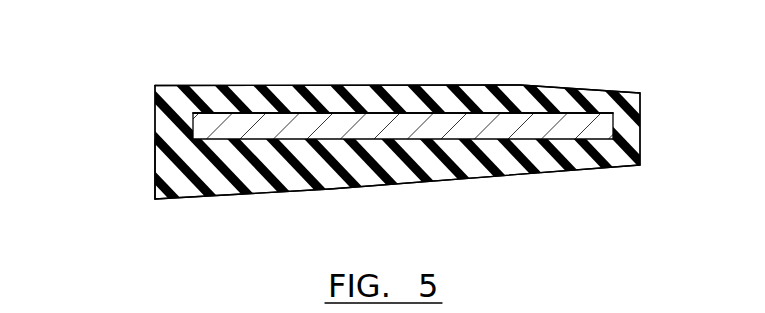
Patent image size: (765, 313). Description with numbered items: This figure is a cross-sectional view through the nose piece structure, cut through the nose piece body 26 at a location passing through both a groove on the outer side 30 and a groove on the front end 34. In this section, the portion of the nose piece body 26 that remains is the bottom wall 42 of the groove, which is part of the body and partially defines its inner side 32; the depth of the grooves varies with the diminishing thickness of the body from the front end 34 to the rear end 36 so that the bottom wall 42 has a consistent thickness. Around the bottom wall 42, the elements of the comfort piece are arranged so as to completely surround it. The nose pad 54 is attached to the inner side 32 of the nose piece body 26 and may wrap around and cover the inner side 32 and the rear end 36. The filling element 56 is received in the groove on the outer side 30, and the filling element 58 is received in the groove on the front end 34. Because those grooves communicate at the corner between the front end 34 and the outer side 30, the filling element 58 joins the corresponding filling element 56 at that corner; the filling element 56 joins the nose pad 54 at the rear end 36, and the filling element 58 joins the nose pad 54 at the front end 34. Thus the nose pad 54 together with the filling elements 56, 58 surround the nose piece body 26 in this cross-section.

The nose piece body 26 is at (487, 130).
The outer side 30 is at (513, 175).
The inner side 32 is at (332, 112).
The front end 34 is at (152, 115).
The rear end 36 is at (609, 139).
The bottom wall 42 is at (406, 128).
The nose pad 54 is at (543, 85).
The filling element 56 is at (222, 184).
The filling element 58 is at (155, 162).